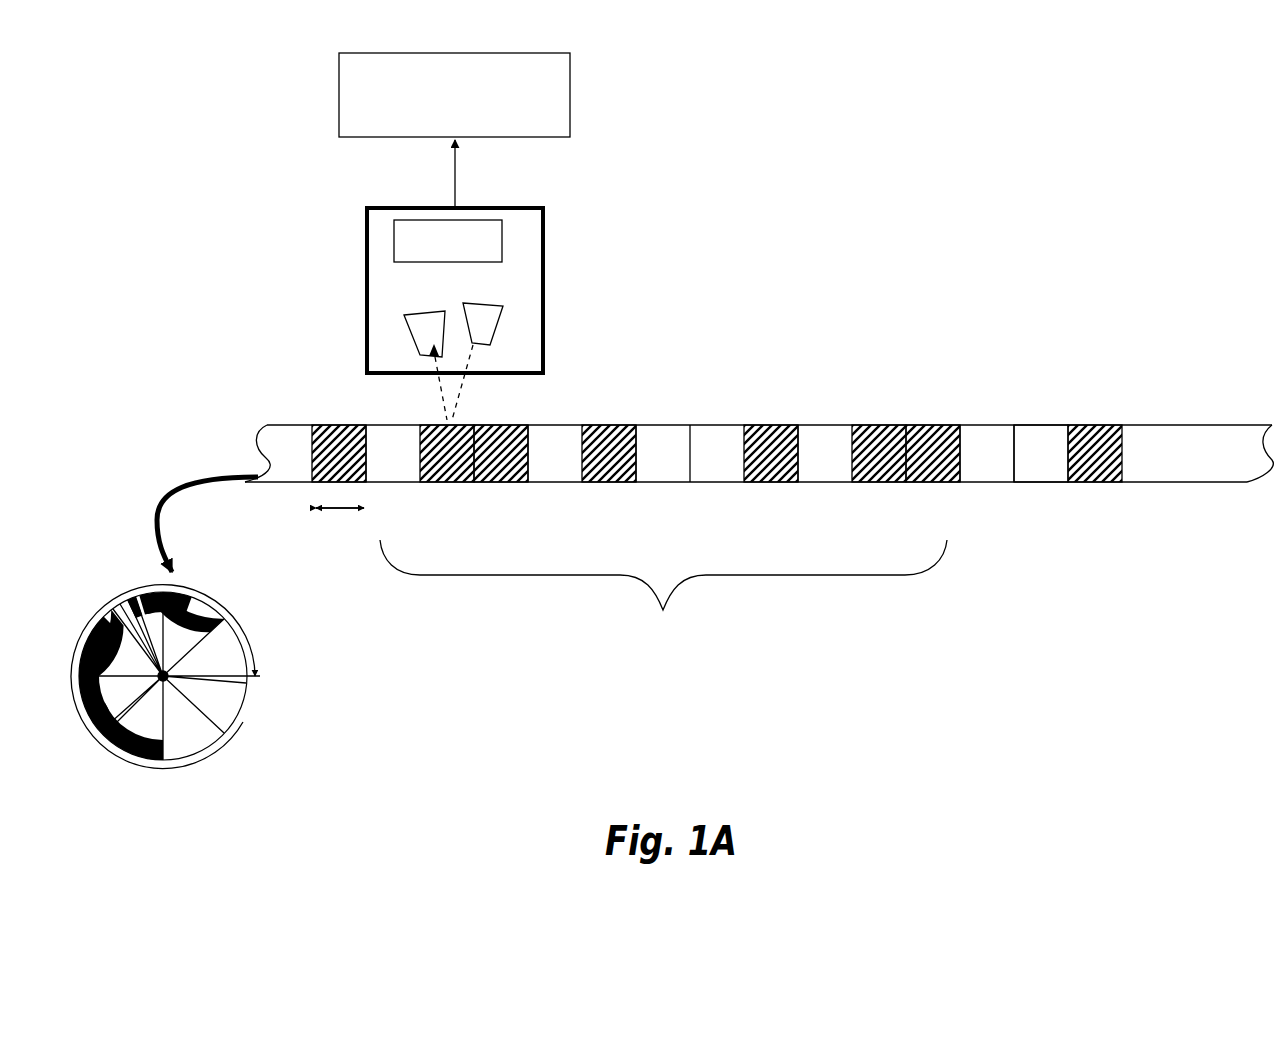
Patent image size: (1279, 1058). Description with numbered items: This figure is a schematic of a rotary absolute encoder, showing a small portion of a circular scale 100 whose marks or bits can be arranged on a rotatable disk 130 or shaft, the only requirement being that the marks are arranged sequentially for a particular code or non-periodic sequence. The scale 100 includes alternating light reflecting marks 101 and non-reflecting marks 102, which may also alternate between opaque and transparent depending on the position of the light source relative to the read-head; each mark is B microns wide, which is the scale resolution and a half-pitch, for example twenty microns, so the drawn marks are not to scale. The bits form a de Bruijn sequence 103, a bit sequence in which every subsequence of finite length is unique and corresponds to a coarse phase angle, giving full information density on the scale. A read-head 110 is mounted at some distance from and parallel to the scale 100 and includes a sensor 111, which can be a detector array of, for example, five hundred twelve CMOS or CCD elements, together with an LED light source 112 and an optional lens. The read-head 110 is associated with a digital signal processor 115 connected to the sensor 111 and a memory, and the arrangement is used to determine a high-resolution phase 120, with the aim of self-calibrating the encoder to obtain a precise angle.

The circular scale 100 is at (243, 458).
The light reflecting mark 101 is at (1014, 430).
The non-reflecting mark 102 is at (1107, 427).
The de Bruijn sequence 103 is at (665, 570).
The read-head 110 is at (543, 358).
The sensor 111 is at (405, 340).
The light source 112 is at (541, 317).
The digital signal processor 115 is at (502, 224).
The high-resolution phase 120 is at (570, 123).
The rotatable disk 130 is at (204, 671).